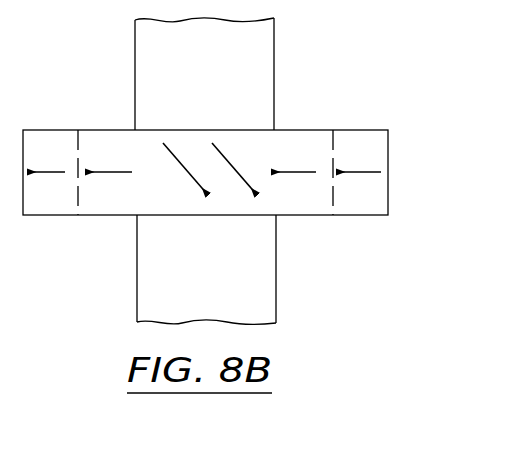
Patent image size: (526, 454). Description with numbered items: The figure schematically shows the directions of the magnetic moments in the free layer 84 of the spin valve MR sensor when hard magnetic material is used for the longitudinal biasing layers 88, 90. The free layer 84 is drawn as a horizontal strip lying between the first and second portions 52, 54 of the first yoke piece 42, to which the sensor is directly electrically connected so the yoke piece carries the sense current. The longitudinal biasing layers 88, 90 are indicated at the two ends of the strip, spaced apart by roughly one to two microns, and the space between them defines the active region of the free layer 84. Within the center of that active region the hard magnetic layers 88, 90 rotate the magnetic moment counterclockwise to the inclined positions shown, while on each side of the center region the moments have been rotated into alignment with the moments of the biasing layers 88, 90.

The first yoke piece 42 is at (245, 171).
The first portion of the first yoke piece 52 is at (258, 297).
The second portion of the first yoke piece 54 is at (258, 76).
The free layer 84 is at (303, 150).
The longitudinal biasing layer 88 is at (55, 203).
The longitudinal biasing layer 90 is at (366, 195).